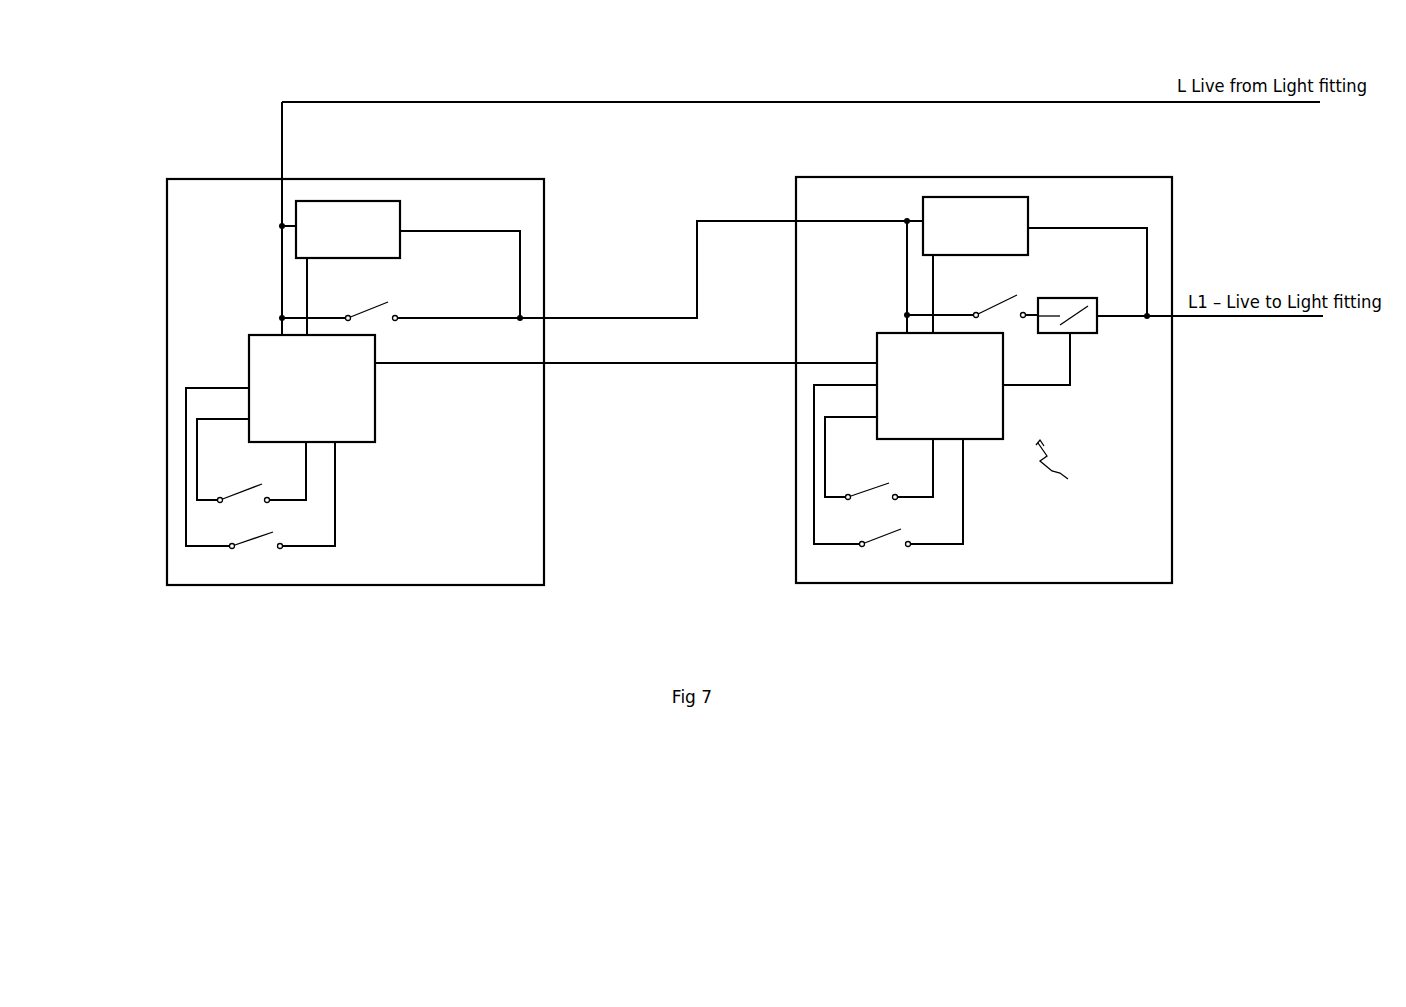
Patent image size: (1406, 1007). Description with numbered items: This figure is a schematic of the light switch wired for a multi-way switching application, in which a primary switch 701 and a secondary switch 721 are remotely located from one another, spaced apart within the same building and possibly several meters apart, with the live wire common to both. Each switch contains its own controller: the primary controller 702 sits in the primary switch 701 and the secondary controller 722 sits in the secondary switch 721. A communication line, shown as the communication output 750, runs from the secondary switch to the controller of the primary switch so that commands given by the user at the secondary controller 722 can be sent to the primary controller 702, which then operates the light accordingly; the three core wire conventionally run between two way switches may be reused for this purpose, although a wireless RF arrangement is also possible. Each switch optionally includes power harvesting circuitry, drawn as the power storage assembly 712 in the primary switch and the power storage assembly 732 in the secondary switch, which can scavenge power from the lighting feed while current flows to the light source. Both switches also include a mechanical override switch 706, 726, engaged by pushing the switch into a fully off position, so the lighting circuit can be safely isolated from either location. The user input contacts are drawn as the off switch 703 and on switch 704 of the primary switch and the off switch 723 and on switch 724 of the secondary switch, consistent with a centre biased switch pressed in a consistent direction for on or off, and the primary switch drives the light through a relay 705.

The primary switch 701 is at (792, 207).
The primary controller 702 is at (893, 353).
The off switch of primary switch 703 is at (880, 493).
The on switch of primary switch 704 is at (887, 544).
The relay 705 is at (1087, 307).
The mechanical override switch 706 is at (1027, 295).
The power storage assembly 712 is at (978, 207).
The secondary switch 721 is at (207, 157).
The secondary controller 722 is at (270, 363).
The off switch of secondary switch 723 is at (253, 502).
The on switch of secondary switch 724 is at (253, 547).
The mechanical override switch 726 is at (403, 308).
The power storage assembly 732 is at (363, 205).
The communication output 750 is at (626, 378).